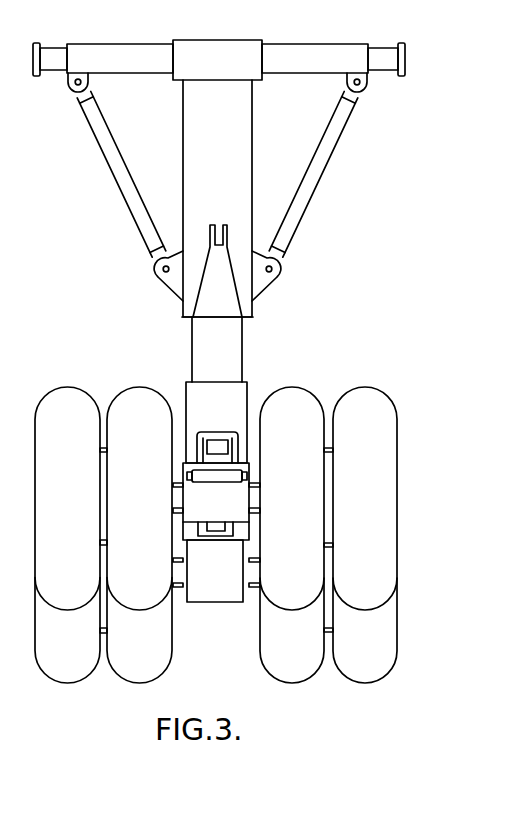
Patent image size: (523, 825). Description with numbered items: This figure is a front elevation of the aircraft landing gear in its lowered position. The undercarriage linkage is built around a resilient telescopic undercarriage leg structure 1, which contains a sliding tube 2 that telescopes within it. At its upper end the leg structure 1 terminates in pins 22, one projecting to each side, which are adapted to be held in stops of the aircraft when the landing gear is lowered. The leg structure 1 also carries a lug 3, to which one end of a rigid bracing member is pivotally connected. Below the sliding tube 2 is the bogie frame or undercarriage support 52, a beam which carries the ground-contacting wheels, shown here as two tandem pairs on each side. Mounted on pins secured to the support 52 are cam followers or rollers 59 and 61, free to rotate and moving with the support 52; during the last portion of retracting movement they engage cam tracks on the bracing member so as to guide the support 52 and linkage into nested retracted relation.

The telescopic undercarriage leg structure 1 is at (224, 127).
The sliding tube 2 is at (205, 342).
The lug 3 is at (219, 285).
The pins 22 is at (49, 46).
The bogie frame or undercarriage support 52 is at (223, 598).
The cam follower or roller 59 is at (217, 534).
The cam follower or roller 61 is at (221, 479).